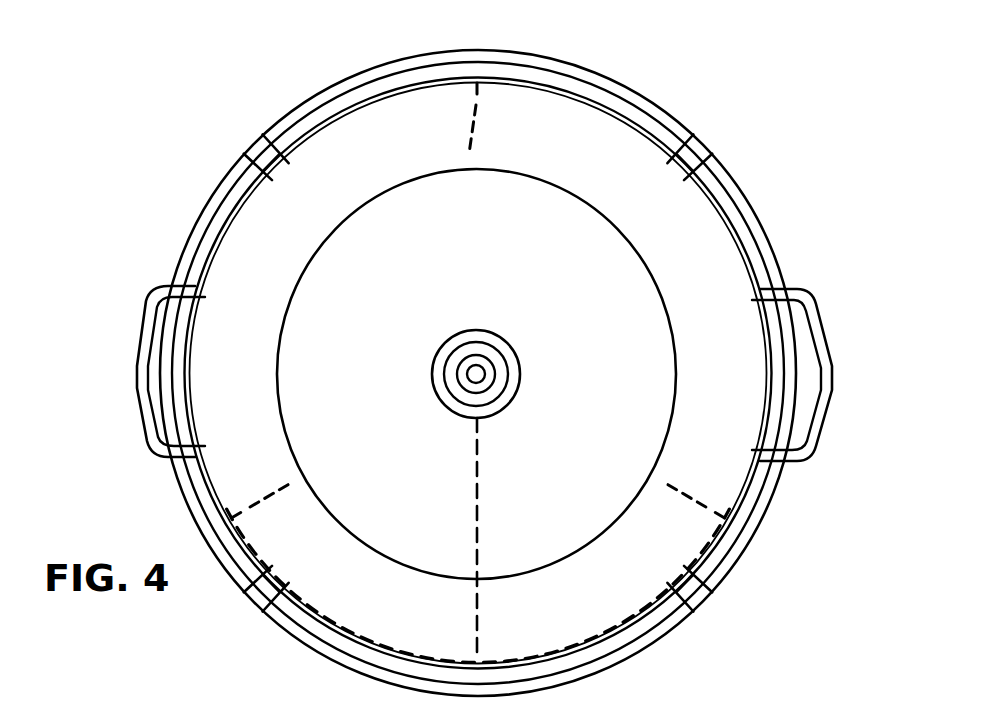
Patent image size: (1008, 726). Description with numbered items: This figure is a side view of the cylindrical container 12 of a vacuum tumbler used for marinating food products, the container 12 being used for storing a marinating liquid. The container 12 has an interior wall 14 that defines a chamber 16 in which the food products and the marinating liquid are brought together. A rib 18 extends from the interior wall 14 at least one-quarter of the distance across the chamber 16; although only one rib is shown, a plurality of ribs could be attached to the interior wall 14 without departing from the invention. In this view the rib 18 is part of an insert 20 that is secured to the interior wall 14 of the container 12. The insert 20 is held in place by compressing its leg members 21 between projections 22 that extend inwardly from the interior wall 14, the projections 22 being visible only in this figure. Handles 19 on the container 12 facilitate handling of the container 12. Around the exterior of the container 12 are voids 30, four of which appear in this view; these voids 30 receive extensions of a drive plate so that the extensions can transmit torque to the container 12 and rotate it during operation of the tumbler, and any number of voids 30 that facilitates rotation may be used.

The container 12 is at (182, 486).
The interior wall 14 is at (700, 214).
The chamber 16 is at (266, 250).
The rib 18 is at (483, 522).
The handles 19 is at (137, 388).
The insert 20 is at (645, 638).
The leg members 21 is at (265, 506).
The projections 22 is at (480, 121).
The voids 30 is at (702, 152).